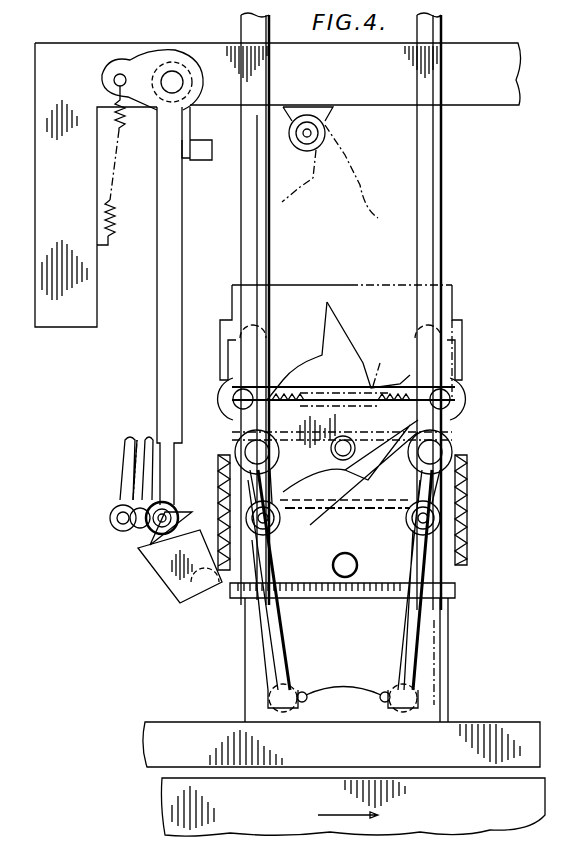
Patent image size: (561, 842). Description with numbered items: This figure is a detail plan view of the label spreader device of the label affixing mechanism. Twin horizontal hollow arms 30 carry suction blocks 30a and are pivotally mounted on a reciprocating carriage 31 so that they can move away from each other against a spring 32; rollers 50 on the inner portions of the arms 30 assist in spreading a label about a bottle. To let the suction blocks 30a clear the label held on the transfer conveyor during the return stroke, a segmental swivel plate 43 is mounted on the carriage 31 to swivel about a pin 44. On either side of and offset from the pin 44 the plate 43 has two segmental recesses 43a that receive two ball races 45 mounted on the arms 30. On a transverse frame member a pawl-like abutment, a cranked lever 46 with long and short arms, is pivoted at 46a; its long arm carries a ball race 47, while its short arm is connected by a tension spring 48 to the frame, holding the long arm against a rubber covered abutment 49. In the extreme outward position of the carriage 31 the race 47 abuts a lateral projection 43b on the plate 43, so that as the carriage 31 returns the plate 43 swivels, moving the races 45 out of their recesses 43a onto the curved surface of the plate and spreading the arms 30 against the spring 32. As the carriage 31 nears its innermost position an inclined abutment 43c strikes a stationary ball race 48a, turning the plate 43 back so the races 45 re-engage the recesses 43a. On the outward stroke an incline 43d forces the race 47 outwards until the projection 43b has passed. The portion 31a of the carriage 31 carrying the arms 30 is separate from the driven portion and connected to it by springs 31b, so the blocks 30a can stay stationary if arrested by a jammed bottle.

The pivot 46a is at (167, 85).
The rubber covered abutment 49 is at (198, 140).
The ball race 48a is at (305, 143).
The inclined abutment 43c is at (348, 160).
The tension spring 48 is at (109, 236).
The cranked lever 46 is at (160, 357).
The segmental recesses 43a is at (365, 368).
The spring 32 is at (420, 424).
The carriage portion 31a is at (446, 434).
The springs 31b is at (467, 462).
The ball races 45 is at (437, 519).
The ball race 47 is at (158, 524).
The lateral projection 43b is at (156, 509).
The incline 43d is at (197, 585).
The reciprocating carriage 31 is at (238, 600).
The pin 44 is at (345, 578).
The segmental swivel plate 43 is at (392, 600).
The twin horizontal hollow arms 30 is at (410, 660).
The rollers 50 is at (343, 689).
The suction blocks 30a is at (285, 705).